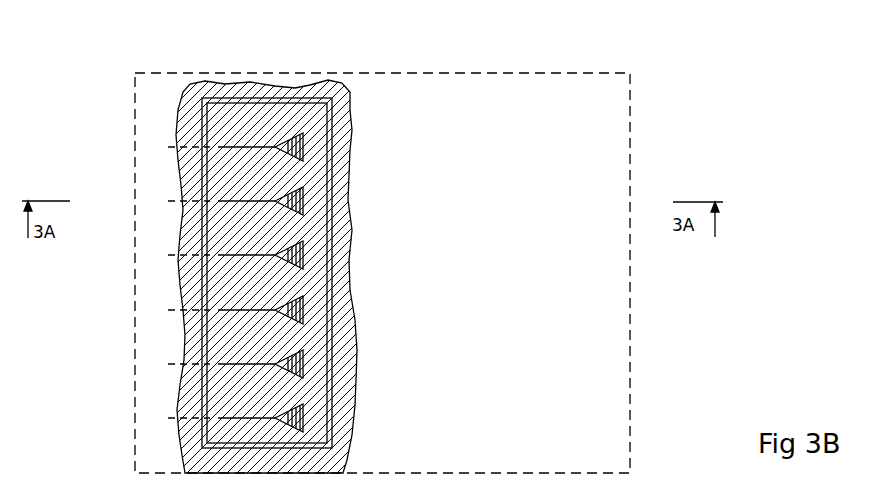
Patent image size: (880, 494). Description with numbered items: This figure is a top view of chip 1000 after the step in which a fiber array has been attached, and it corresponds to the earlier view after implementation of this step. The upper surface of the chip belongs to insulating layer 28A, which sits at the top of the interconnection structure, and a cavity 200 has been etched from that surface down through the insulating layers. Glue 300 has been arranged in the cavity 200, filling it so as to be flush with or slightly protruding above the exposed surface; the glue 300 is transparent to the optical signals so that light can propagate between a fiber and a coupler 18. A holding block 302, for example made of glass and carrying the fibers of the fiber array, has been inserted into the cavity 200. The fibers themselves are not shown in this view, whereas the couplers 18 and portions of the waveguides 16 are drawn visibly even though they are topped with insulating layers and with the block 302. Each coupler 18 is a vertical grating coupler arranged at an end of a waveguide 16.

The chip 1000 is at (375, 244).
The insulating layer 28A is at (505, 87).
The glue 300 is at (350, 113).
The holding block 302 is at (298, 110).
The cavity 200 is at (352, 153).
The waveguides 16 is at (257, 200).
The couplers 18 is at (290, 190).